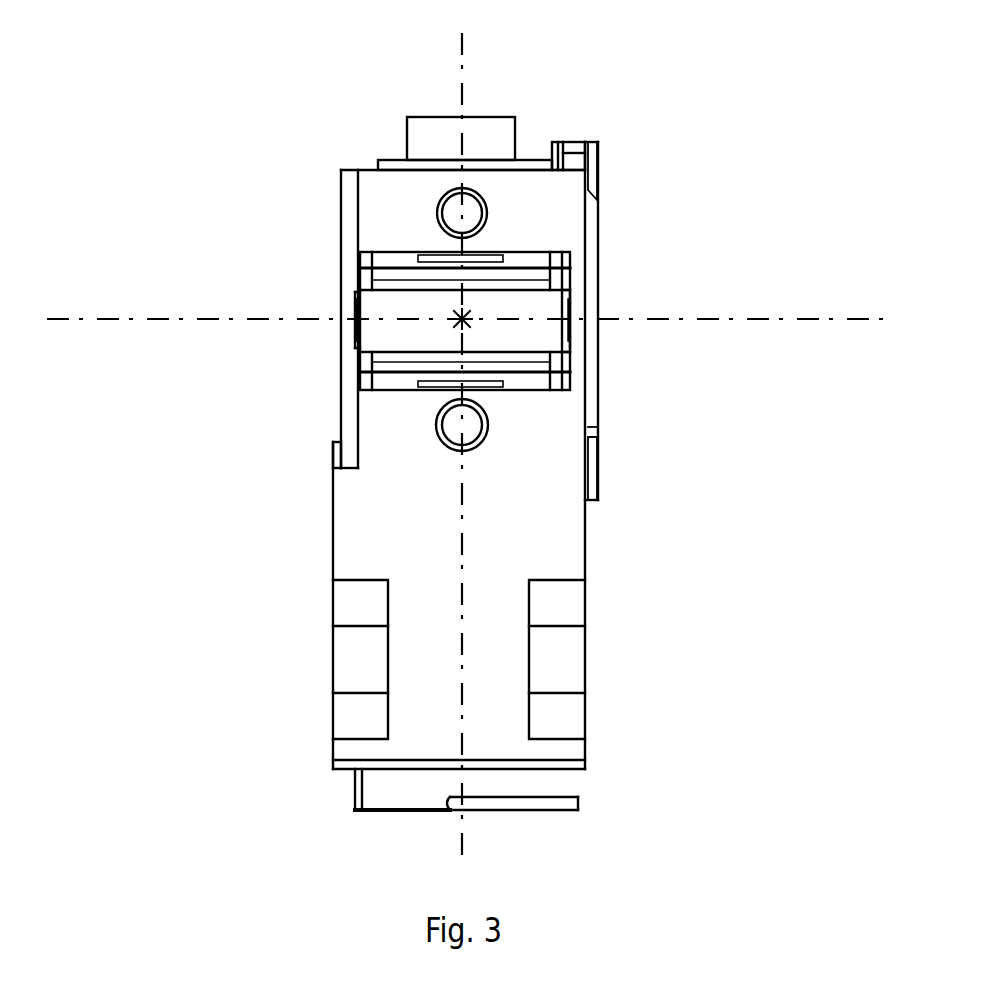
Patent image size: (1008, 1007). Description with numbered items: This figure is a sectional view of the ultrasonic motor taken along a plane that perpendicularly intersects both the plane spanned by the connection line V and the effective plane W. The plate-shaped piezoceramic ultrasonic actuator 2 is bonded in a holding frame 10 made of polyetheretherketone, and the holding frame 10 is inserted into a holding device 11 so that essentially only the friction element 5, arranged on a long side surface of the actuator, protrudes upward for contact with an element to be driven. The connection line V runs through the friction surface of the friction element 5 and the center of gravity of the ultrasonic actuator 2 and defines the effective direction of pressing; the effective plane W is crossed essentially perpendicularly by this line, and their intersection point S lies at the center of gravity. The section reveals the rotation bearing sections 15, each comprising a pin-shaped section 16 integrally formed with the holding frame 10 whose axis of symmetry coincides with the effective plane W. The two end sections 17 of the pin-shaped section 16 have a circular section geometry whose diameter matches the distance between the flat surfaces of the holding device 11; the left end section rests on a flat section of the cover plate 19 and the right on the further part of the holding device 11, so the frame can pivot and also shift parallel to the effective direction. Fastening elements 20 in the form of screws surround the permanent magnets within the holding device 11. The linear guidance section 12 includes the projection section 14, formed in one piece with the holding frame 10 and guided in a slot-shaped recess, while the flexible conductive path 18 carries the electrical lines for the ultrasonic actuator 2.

The ultrasonic actuator 2 is at (523, 163).
The friction element 5 is at (452, 133).
The holding frame 10 is at (388, 282).
The holding device 11 is at (532, 533).
The linear guidance section 12 is at (605, 217).
The projection section 14 is at (593, 380).
The rotation bearing section 15 is at (332, 357).
The pin-shaped section 16 is at (505, 340).
The end section 17 is at (352, 314).
The flexible conductive path 18 is at (577, 808).
The cover plate 19 is at (351, 190).
The fastening element 20 is at (452, 435).
The connection line V is at (465, 83).
The effective plane W is at (828, 320).
The intersection point S is at (462, 319).